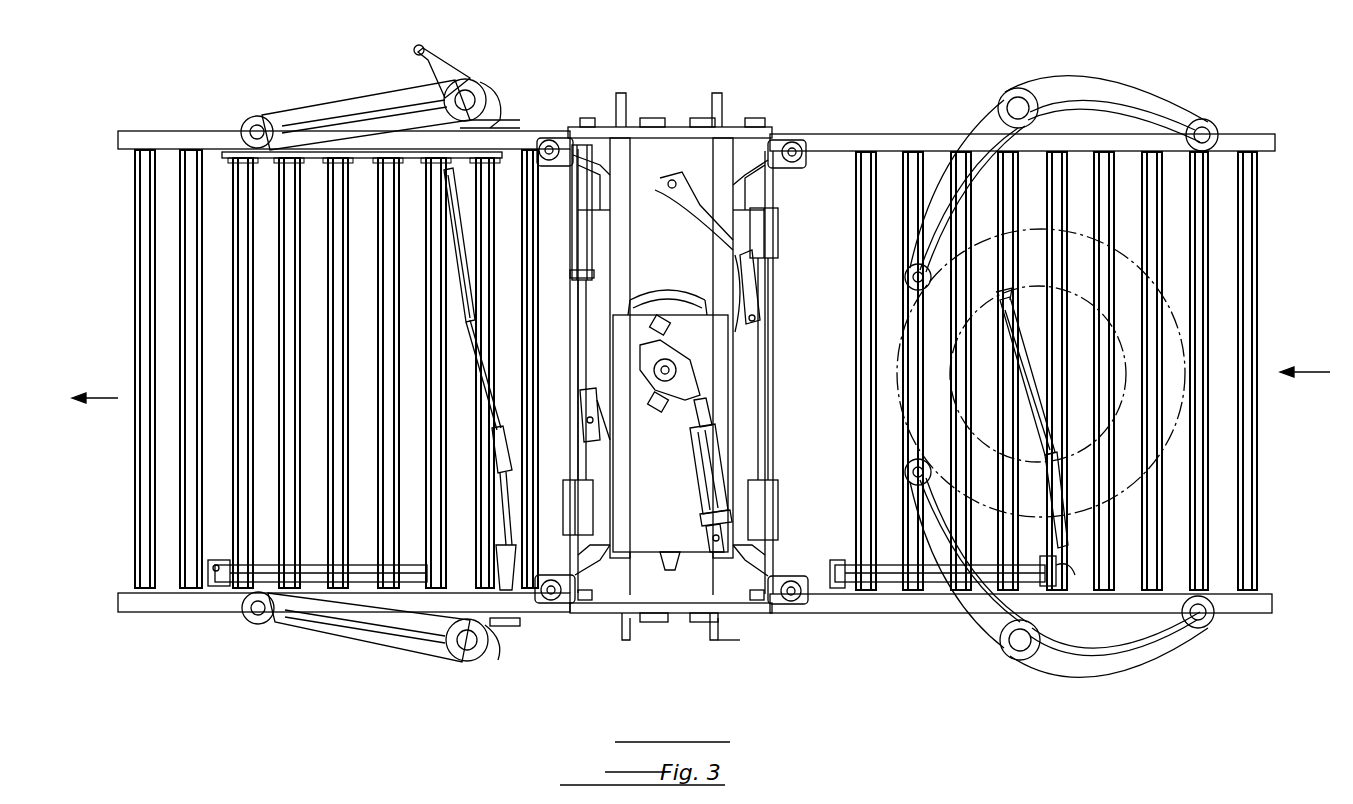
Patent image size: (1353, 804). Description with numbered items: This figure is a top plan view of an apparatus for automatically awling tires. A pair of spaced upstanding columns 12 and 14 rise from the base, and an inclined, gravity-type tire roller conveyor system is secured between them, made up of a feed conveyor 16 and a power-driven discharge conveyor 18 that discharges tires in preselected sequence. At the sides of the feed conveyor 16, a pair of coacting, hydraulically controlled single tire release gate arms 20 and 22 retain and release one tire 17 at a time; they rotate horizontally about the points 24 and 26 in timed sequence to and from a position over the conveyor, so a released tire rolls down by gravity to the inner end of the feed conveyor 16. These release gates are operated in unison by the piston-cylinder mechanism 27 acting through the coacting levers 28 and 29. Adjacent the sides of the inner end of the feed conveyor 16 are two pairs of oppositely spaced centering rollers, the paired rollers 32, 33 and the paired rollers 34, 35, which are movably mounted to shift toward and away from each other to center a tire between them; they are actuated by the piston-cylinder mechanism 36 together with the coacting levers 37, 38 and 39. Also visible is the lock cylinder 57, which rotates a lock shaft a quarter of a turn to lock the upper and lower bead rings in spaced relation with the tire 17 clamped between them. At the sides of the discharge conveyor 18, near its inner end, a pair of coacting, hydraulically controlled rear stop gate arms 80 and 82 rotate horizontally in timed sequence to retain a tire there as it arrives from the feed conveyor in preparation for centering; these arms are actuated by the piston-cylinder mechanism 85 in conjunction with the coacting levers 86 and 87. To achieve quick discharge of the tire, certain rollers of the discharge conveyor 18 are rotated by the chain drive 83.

The upstanding column 12 is at (720, 93).
The upstanding column 14 is at (746, 642).
The feed conveyor 16 is at (1268, 134).
The tire 17 is at (1170, 474).
The discharge conveyor 18 is at (140, 120).
The single tire release gate arm 20 is at (1160, 650).
The single tire release gate arm 22 is at (1130, 78).
The rotation point 24 is at (1015, 660).
The rotation point 26 is at (1012, 90).
The piston-cylinder mechanism 27 is at (890, 600).
The coacting lever 28 is at (1046, 580).
The coacting lever 29 is at (1020, 368).
The centering roller 32 is at (556, 605).
The centering roller 33 is at (800, 605).
The centering roller 34 is at (552, 138).
The centering roller 35 is at (798, 140).
The piston-cylinder mechanism 36 is at (580, 216).
The coacting lever 37 is at (590, 457).
The coacting lever 38 is at (755, 272).
The coacting lever 39 is at (748, 338).
The lock cylinder 57 is at (690, 470).
The rear stop gate arm 80 is at (352, 640).
The rear stop gate arm 82 is at (314, 112).
The chain drive 83 is at (360, 152).
The piston-cylinder mechanism 85 is at (262, 565).
The coacting lever 86 is at (490, 580).
The coacting lever 87 is at (445, 300).